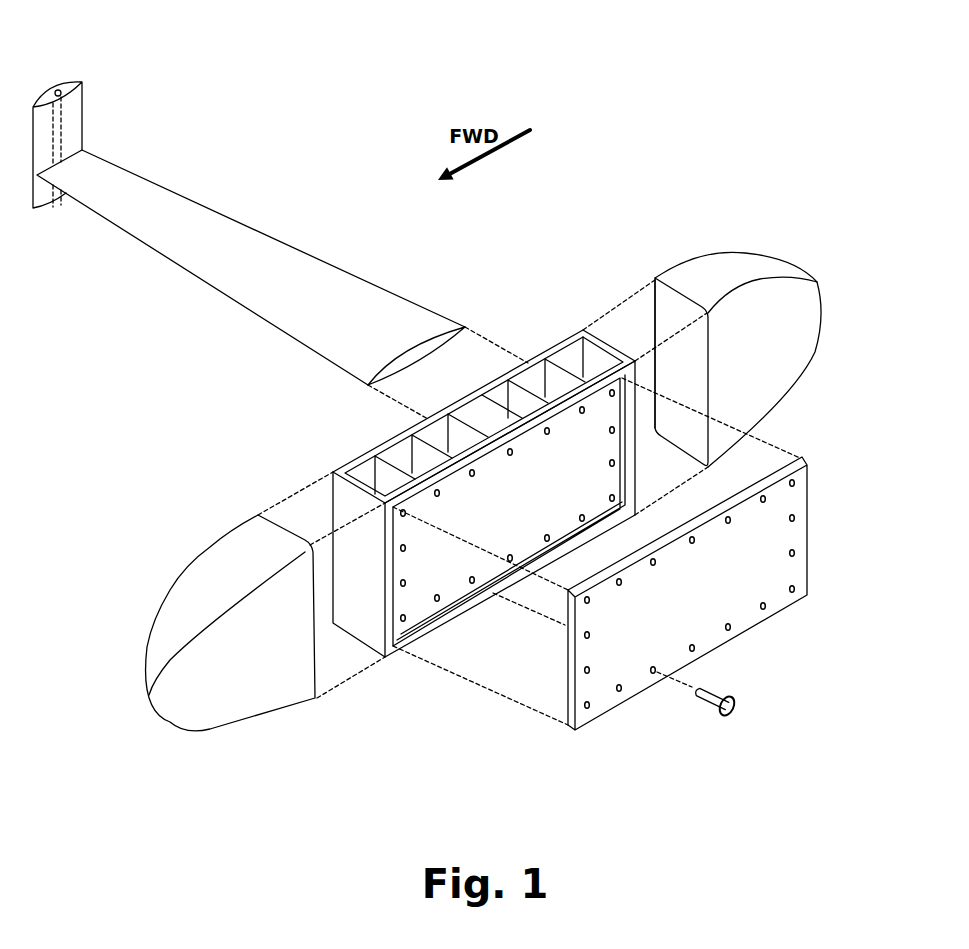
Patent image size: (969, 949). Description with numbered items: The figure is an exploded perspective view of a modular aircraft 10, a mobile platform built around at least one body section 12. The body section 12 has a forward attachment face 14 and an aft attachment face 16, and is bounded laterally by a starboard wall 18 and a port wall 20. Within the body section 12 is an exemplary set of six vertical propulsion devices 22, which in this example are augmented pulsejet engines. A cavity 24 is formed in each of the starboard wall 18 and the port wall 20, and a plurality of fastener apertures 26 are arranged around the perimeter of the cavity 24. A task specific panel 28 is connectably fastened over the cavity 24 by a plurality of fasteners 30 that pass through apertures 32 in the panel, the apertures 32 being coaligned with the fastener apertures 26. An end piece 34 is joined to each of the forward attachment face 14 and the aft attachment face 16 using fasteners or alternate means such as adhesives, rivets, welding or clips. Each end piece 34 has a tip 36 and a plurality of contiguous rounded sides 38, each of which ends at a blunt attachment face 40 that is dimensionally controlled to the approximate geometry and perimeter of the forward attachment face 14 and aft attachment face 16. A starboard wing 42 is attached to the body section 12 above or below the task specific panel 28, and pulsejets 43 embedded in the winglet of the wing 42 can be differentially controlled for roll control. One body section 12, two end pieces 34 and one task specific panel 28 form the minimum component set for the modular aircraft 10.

The modular aircraft 10 is at (594, 186).
The body section 12 is at (360, 458).
The forward attachment face 14 is at (352, 512).
The aft attachment face 16 is at (605, 338).
The starboard wall 18 is at (368, 441).
The port wall 20 is at (394, 652).
The vertical propulsion device 22 is at (595, 362).
The cavity 24 is at (398, 568).
The fastener apertures 26 is at (620, 519).
The task specific panel 28 is at (788, 572).
The fasteners 30 is at (737, 704).
The apertures 32 is at (653, 676).
The end piece 34 is at (190, 610).
The tip 36 is at (817, 282).
The rounded sides 38 is at (798, 353).
The blunt attachment face 40 is at (700, 378).
The starboard wing 42 is at (289, 287).
The pulsejets 43 is at (62, 88).